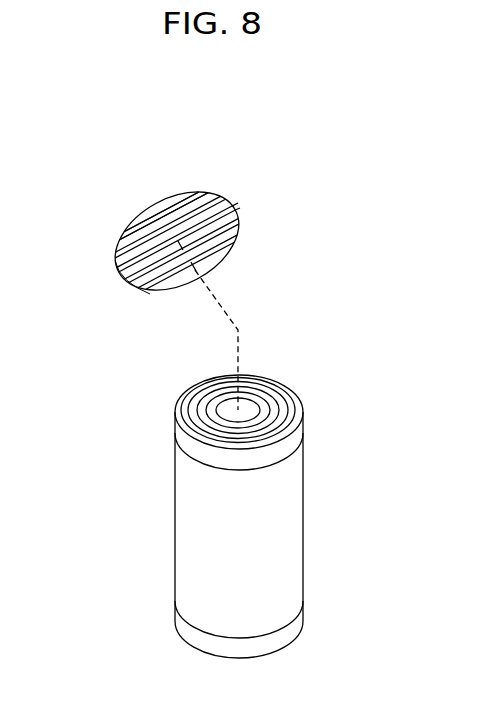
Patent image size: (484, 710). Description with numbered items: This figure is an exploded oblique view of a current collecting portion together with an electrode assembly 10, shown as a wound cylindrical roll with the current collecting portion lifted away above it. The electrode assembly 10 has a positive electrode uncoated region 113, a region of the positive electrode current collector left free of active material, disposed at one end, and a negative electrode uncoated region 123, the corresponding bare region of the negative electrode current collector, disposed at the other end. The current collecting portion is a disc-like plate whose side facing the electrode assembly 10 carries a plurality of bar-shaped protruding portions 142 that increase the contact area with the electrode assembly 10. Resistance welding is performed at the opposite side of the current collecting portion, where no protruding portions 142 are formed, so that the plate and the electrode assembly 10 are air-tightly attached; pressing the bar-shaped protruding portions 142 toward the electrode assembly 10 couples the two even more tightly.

The electrode assembly 10 is at (273, 516).
The positive electrode uncoated region 113 is at (296, 441).
The negative electrode uncoated region 123 is at (296, 629).
The bar-shaped protruding portions 142 is at (236, 216).